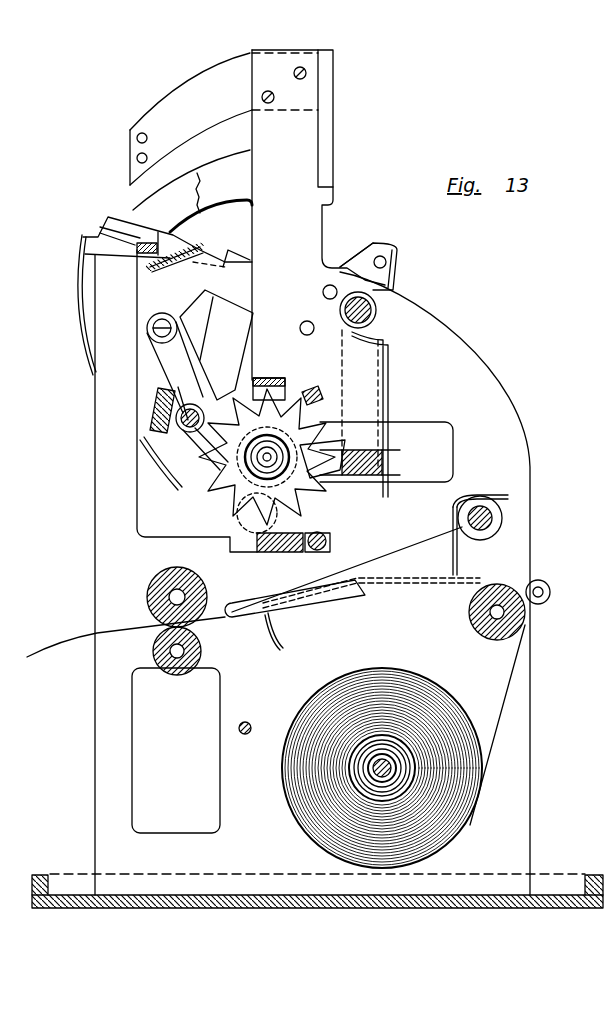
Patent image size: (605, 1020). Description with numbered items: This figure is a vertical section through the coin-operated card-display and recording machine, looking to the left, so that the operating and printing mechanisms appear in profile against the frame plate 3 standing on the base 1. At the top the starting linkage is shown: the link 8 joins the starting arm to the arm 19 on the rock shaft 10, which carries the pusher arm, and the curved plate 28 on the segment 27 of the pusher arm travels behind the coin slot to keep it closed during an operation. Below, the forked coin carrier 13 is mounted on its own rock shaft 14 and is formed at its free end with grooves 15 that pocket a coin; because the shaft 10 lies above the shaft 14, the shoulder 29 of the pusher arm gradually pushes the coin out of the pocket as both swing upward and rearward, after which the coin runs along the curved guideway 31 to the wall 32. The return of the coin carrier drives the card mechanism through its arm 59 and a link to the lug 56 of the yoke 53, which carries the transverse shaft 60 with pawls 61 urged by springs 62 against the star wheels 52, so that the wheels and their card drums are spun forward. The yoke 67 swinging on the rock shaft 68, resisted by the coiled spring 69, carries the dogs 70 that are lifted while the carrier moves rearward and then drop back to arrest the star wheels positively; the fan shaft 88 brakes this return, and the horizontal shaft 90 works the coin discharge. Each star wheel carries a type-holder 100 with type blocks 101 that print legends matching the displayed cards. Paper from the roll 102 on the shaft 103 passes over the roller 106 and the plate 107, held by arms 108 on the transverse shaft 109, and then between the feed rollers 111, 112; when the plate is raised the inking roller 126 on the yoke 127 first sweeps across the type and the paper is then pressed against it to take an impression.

The base 1 is at (547, 882).
The frame plate 3 is at (458, 347).
The link 8 is at (387, 282).
The rock shaft 10 is at (332, 285).
The forked coin carrier 13 is at (207, 232).
The rock shaft 14 is at (302, 333).
The grooves 15 is at (110, 235).
The arm 19 is at (357, 263).
The segment 27 is at (195, 333).
The curved plate 28 is at (75, 283).
The shoulder 29 is at (133, 218).
The curved guideway 31 is at (163, 102).
The wall 32 is at (325, 140).
The star wheels 52 is at (320, 512).
The yoke 53 is at (160, 403).
The lug 56 is at (143, 458).
The arm 59 is at (160, 305).
The transverse shaft 60 is at (160, 397).
The arm 61 is at (193, 457).
The springs 62 is at (163, 432).
The yoke 67 is at (357, 365).
The rock shaft 68 is at (373, 315).
The coiled spring 69 is at (390, 387).
The dogs 70 is at (333, 467).
The shaft 88 is at (250, 720).
The horizontal shaft 90 is at (547, 575).
The type-holder 100 is at (213, 503).
The type blocks 101 is at (328, 386).
The roll 102 is at (407, 687).
The shaft 103 is at (367, 780).
The roller 106 is at (472, 618).
The plate or guideway 107 is at (397, 583).
The arms 108 is at (432, 538).
The transverse shaft 109 is at (126, 585).
The feed roller 111 is at (165, 653).
The feed roller 112 is at (147, 595).
The inking roller 126 is at (317, 552).
The yoke 127 is at (267, 552).